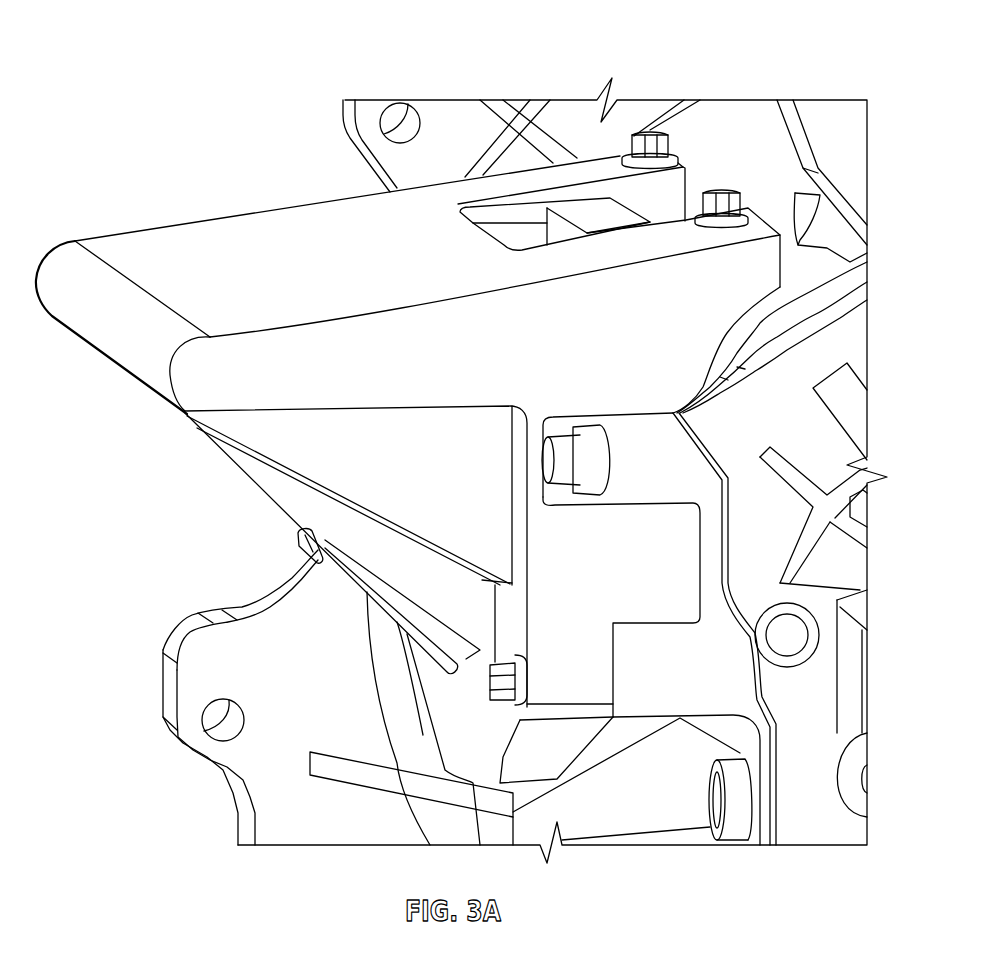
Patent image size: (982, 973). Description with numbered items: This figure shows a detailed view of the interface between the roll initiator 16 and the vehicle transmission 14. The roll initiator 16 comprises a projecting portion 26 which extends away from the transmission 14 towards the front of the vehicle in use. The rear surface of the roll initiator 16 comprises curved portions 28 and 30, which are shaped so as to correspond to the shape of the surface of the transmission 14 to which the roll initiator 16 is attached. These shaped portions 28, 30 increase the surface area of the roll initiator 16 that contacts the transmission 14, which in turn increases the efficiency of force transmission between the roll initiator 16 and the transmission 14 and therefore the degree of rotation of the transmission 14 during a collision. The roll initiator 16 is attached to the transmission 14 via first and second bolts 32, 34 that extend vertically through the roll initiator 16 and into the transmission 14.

The transmission 14 is at (823, 333).
The roll initiator 16 is at (452, 178).
The projecting portion 26 is at (143, 353).
The curved portion 28 is at (735, 327).
The curved portion 30 is at (680, 624).
The first bolt 32 is at (650, 130).
The second bolt 34 is at (717, 193).